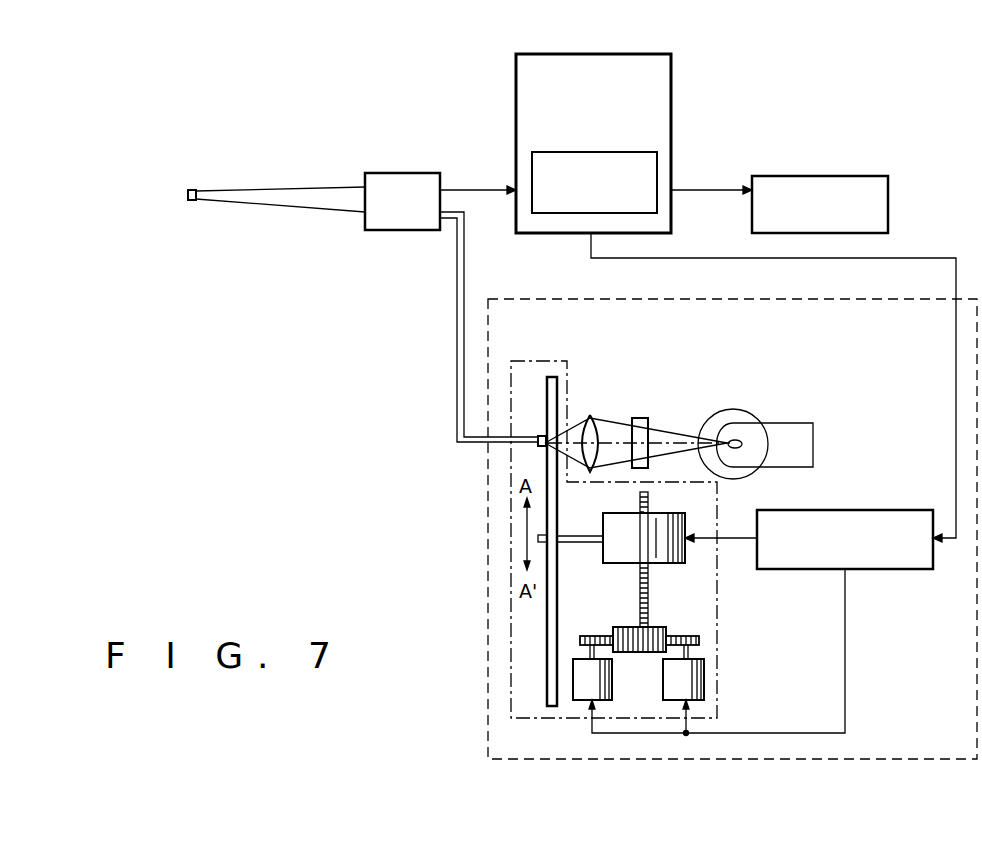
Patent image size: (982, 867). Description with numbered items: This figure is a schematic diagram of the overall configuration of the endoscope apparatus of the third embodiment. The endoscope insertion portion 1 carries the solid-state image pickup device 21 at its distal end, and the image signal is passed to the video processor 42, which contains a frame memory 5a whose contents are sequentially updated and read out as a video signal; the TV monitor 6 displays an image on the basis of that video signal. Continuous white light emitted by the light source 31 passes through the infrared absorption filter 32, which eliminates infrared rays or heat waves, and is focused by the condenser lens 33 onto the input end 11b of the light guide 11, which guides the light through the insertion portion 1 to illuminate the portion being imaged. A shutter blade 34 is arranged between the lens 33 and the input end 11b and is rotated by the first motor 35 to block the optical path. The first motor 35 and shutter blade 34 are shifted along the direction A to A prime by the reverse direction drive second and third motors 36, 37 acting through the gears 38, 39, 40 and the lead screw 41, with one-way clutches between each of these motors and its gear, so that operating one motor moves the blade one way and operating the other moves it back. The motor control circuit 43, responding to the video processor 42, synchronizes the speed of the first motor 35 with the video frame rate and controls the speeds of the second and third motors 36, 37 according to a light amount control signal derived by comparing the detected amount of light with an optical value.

The endoscope insertion portion 1 is at (390, 174).
The solid-state image pickup device 21 is at (188, 195).
The light guide 11 is at (457, 316).
The input end of light guide 11b is at (537, 445).
The video processor 42 is at (681, 66).
The frame memory 5a is at (606, 151).
The TV monitor 6 is at (828, 176).
The light source 31 is at (733, 411).
The infrared absorption filter 32 is at (640, 418).
The condenser lens 33 is at (590, 415).
The shutter blade 34 is at (547, 646).
The first motor 35 is at (683, 500).
The second motor 36 is at (587, 694).
The third motor 37 is at (705, 688).
The gear 38 is at (583, 636).
The gear 39 is at (700, 640).
The gear 40 is at (640, 652).
The lead screw 41 is at (650, 598).
The motor control circuit 43 is at (872, 571).